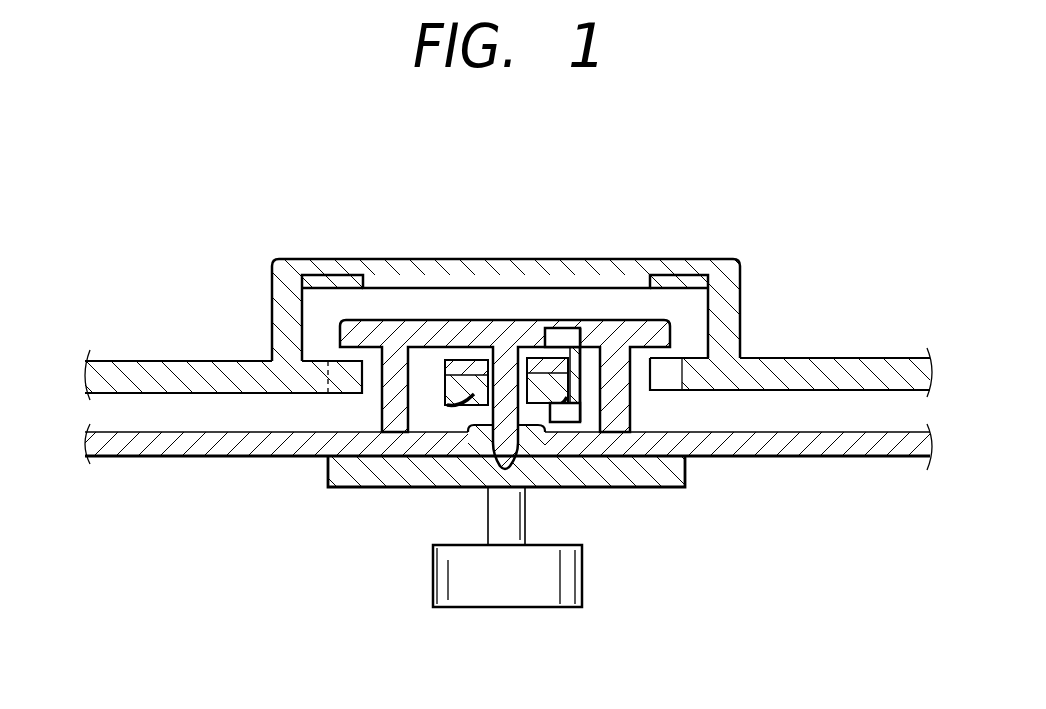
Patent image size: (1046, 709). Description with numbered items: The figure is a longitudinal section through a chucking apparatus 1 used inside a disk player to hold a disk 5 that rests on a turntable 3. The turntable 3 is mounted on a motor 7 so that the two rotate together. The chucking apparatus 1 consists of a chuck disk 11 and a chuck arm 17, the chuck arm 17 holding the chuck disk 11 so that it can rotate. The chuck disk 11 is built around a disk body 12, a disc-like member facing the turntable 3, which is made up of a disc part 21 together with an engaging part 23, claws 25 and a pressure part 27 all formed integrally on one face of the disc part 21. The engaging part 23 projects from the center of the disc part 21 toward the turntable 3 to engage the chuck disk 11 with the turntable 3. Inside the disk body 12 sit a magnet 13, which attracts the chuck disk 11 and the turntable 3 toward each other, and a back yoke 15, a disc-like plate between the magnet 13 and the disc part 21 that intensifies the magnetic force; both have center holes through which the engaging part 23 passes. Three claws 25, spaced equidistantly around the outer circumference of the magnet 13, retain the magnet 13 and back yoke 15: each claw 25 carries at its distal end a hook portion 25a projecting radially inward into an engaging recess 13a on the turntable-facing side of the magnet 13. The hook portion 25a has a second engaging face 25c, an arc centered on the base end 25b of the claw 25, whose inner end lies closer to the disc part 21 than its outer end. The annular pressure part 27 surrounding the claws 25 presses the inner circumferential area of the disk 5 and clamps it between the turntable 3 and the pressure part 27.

The chucking apparatus 1 is at (825, 212).
The turntable 3 is at (666, 489).
The disk 5 is at (887, 447).
The motor 7 is at (533, 600).
The chuck disk 11 is at (636, 314).
The disk body 12 is at (505, 338).
The magnet 13 is at (458, 395).
The engaging recess 13a is at (450, 408).
The back yoke 15 is at (440, 357).
The chuck arm 17 is at (710, 248).
The disc part 21 is at (352, 330).
The engaging part 23 is at (495, 448).
The claw 25 is at (596, 460).
The hook portion 25a is at (566, 442).
The base end 25b is at (573, 325).
The second engaging face 25c is at (578, 440).
The pressure part 27 is at (384, 415).